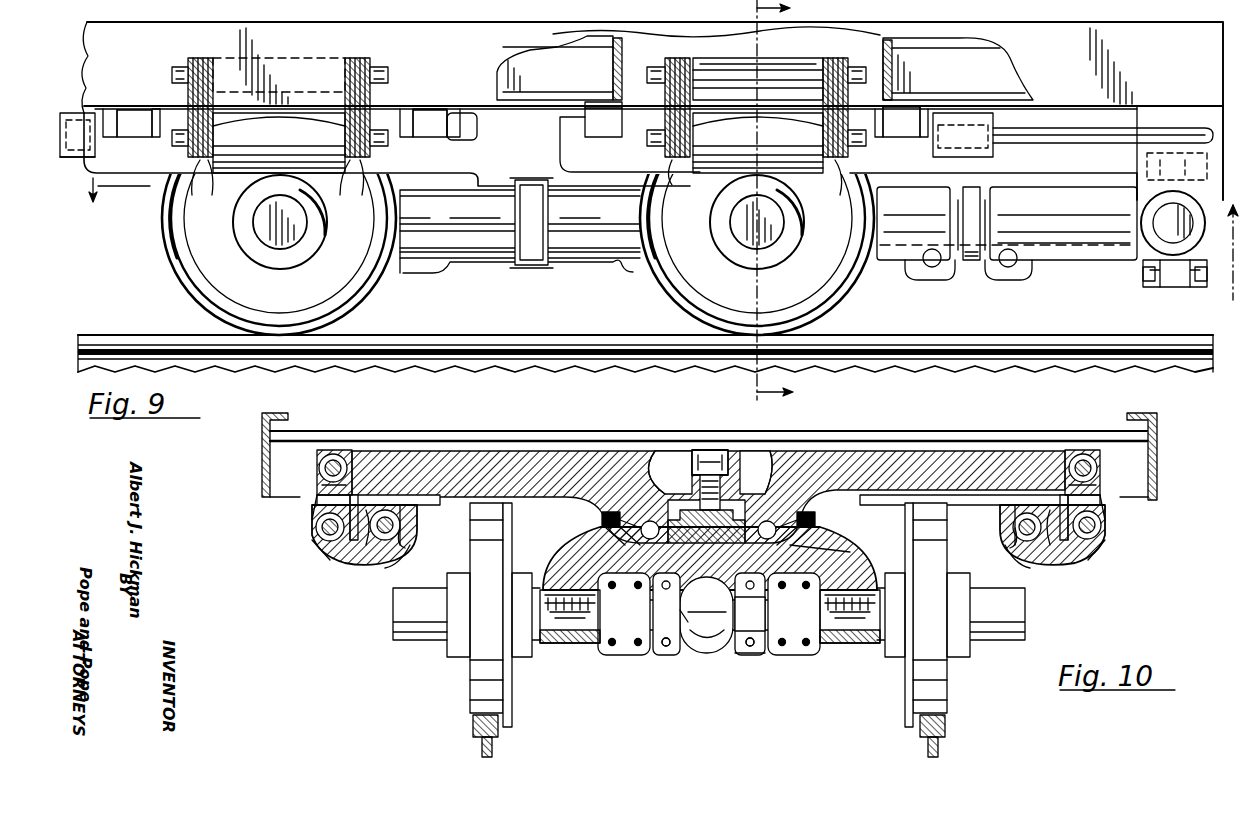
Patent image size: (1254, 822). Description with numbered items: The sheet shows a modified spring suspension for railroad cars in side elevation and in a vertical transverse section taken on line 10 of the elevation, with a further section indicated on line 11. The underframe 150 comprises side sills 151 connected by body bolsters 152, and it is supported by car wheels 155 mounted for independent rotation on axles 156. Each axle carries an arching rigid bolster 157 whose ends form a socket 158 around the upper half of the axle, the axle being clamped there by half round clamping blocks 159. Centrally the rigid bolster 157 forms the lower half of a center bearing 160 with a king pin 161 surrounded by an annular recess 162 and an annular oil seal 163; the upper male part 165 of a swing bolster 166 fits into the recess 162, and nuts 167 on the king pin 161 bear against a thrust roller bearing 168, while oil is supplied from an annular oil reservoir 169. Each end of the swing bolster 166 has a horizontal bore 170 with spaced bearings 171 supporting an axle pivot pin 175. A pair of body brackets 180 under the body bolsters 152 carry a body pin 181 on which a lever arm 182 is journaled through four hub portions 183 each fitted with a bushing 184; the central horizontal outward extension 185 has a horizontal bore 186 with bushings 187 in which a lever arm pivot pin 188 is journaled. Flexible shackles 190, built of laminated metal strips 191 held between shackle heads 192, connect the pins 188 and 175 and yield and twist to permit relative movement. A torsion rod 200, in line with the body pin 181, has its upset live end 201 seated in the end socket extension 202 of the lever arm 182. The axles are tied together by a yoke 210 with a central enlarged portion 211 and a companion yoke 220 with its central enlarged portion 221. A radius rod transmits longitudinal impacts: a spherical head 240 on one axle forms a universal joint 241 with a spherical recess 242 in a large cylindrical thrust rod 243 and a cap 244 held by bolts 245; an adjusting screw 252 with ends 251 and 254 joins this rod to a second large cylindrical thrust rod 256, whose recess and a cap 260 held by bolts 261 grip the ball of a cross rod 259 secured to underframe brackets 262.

In FIG. 9, the section line 10— 10 is at (757, 201).
In FIG. 9, the section line 11— 11 is at (649, 242).
In FIG. 9, the underframe 150 is at (999, 13).
In FIG. 9, the side sills 151 is at (1186, 111).
In FIG. 9, the body bolsters 152 is at (600, 60).
In FIG. 10, the body bolsters 152 is at (466, 436).
In FIG. 9, the car wheels 155 is at (163, 277).
In FIG. 10, the car wheels 155 is at (470, 686).
In FIG. 10, the axles 156 is at (620, 650).
In FIG. 10, the rigid bolster 157 is at (600, 515).
In FIG. 10, the socket 158 is at (590, 596).
In FIG. 10, the half round clamping blocks 159 is at (565, 648).
In FIG. 10, the center bearing 160 is at (830, 518).
In FIG. 10, the king pin 161 is at (712, 450).
In FIG. 10, the annular recess 162 is at (580, 550).
In FIG. 10, the annular oil seal 163 is at (830, 530).
In FIG. 10, the upper male part 165 is at (838, 552).
In FIG. 9, the swing bolster 166 is at (325, 58).
In FIG. 10, the swing bolster 166 is at (552, 452).
In FIG. 10, the nuts 167 is at (752, 452).
In FIG. 10, the thrust roller bearing 168 is at (657, 452).
In FIG. 10, the annular oil reservoir 169 is at (725, 575).
In FIG. 10, the horizontal bore 170 is at (317, 466).
In FIG. 10, the bearings 171 is at (317, 482).
In FIG. 10, the axle pivot pin 175 is at (375, 424).
In FIG. 9, the body brackets 180 is at (135, 125).
In FIG. 10, the body brackets 180 is at (417, 520).
In FIG. 9, the body pin 181 is at (478, 132).
In FIG. 10, the body pin 181 is at (410, 535).
In FIG. 9, the lever arm 182 is at (692, 190).
In FIG. 10, the lever arm 182 is at (360, 578).
In FIG. 9, the hub portions 183 is at (103, 115).
In FIG. 10, the hub portions 183 is at (400, 550).
In FIG. 10, the bushing 184 is at (372, 562).
In FIG. 9, the horizontal outward extension 185 is at (776, 123).
In FIG. 10, the horizontal outward extension 185 is at (316, 532).
In FIG. 10, the horizontal bore 186 is at (318, 542).
In FIG. 10, the bushings 187 is at (325, 552).
In FIG. 10, the lever arm pivot pin 188 is at (316, 520).
In FIG. 9, the flexible shackles 190 is at (808, 93).
In FIG. 10, the flexible shackles 190 is at (300, 507).
In FIG. 9, the laminated metal strips 191 is at (358, 178).
In FIG. 9, the shackle heads 192 is at (200, 180).
In FIG. 9, the torsion rod 200 is at (1105, 136).
In FIG. 9, the live end 201 is at (978, 165).
In FIG. 9, the end socket extension 202 is at (78, 113).
In FIG. 9, the yoke 210 is at (414, 278).
In FIG. 9, the central enlarged portion 211 is at (520, 231).
In FIG. 9, the yoke 220 is at (556, 278).
In FIG. 9, the central enlarged portion 221 is at (520, 216).
In FIG. 9, the large cylindrical thrust rod 243 is at (913, 223).
In FIG. 9, the end of adjusting screw 251 is at (925, 272).
In FIG. 9, the adjusting screw 252 is at (969, 276).
In FIG. 9, the other end of adjusting screw 254 is at (993, 278).
In FIG. 9, the large cylindrical thrust rod 256 is at (1008, 223).
In FIG. 9, the cross rod 259 is at (1158, 232).
In FIG. 9, the cap 260 is at (1205, 282).
In FIG. 9, the bolts 261 is at (1150, 282).
In FIG. 9, the brackets 262 is at (1195, 118).
In FIG. 10, the spherical head or ring 240 is at (733, 658).
In FIG. 10, the universal joint 241 is at (750, 668).
In FIG. 10, the spherical recess 242 is at (695, 660).
In FIG. 10, the cap 244 is at (749, 666).
In FIG. 10, the bolts 245 is at (668, 660).